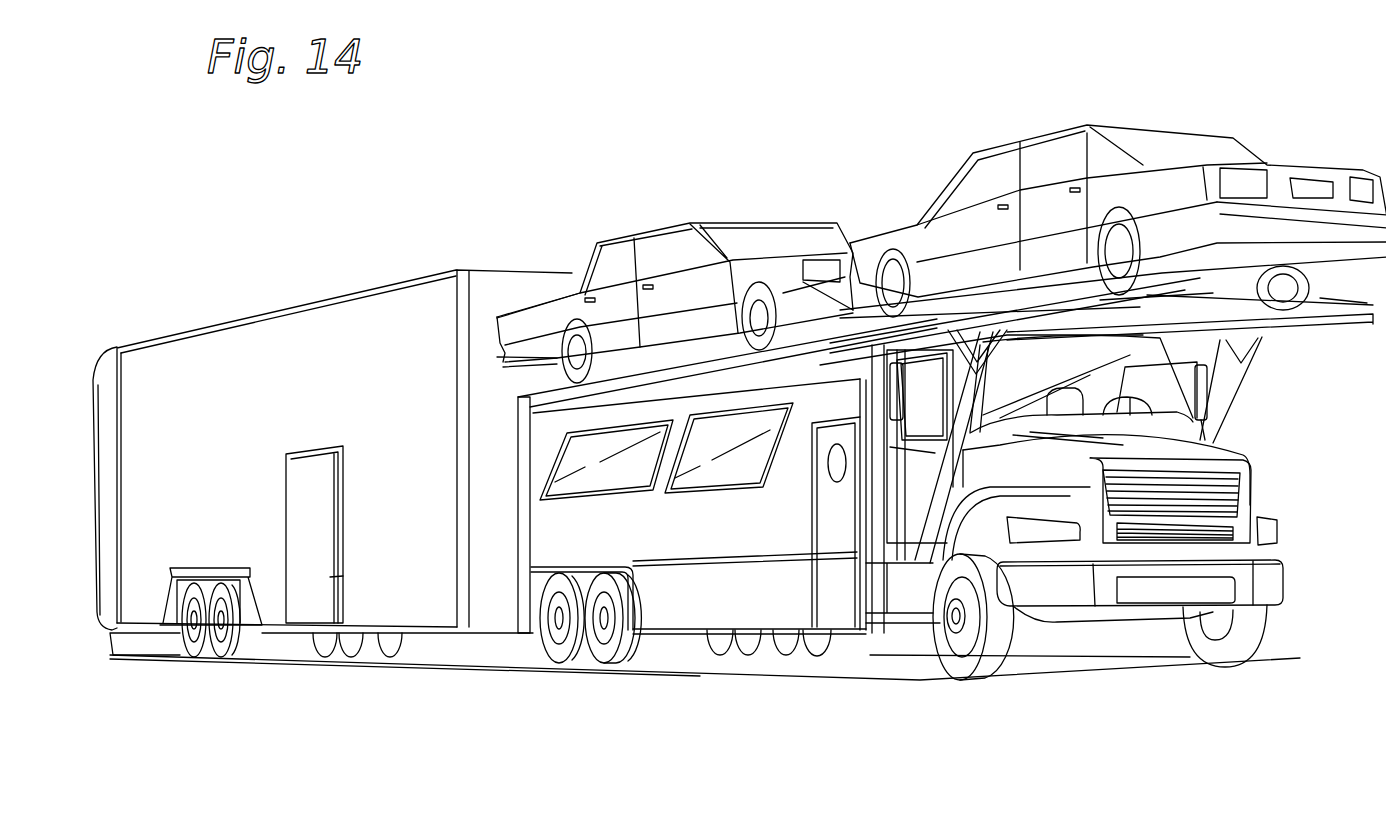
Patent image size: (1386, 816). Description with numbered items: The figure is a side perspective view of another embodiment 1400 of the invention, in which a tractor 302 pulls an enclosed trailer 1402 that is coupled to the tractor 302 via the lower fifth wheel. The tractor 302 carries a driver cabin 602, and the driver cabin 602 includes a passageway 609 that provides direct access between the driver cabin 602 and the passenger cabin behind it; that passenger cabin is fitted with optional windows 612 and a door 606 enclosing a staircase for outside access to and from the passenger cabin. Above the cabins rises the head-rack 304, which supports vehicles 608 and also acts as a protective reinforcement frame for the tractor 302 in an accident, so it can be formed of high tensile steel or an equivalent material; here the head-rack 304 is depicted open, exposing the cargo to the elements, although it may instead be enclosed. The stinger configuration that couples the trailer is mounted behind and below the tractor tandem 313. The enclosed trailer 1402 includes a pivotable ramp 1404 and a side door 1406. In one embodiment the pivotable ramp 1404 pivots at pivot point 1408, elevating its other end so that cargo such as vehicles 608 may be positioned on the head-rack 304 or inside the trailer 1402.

The embodiment 1400 is at (297, 163).
The enclosed trailer 1402 is at (311, 332).
The pivotable ramp 1404 is at (110, 635).
The side door 1406 is at (305, 622).
The pivot point 1408 is at (108, 358).
The tractor 302 is at (1271, 458).
The head-rack 304 is at (1282, 327).
The tractor tandem 313 is at (556, 650).
The driver cabin 602 is at (1262, 497).
The door 606 is at (822, 600).
The vehicles 608 is at (680, 222).
The passageway 609 is at (1190, 430).
The windows 612 is at (608, 483).